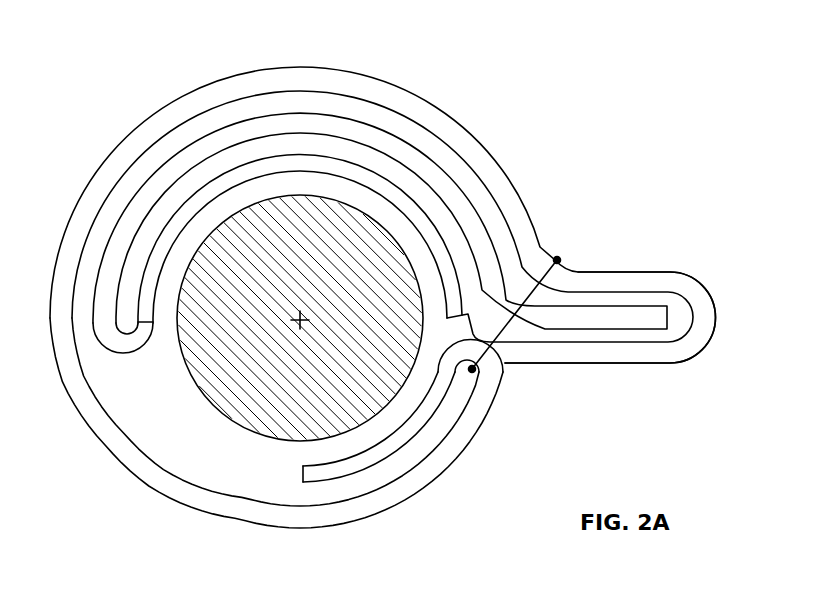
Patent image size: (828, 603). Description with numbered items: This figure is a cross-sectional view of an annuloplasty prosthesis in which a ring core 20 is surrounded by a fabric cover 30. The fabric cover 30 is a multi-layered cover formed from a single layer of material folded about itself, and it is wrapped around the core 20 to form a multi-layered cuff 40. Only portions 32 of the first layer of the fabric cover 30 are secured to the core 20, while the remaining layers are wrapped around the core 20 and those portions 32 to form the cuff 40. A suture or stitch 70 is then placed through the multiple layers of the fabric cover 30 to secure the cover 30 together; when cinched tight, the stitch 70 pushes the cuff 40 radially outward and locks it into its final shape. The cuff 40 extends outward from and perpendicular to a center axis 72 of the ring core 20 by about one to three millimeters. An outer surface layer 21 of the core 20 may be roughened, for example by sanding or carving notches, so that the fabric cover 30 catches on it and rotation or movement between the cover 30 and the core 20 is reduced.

The core 20 is at (283, 418).
The outer surface layer 21 is at (340, 192).
The fabric cover 30 is at (290, 68).
The portions of the first layer 32 is at (233, 186).
The cuff 40 is at (607, 274).
The suture or stitch 70 is at (502, 350).
The center axis 72 is at (298, 326).